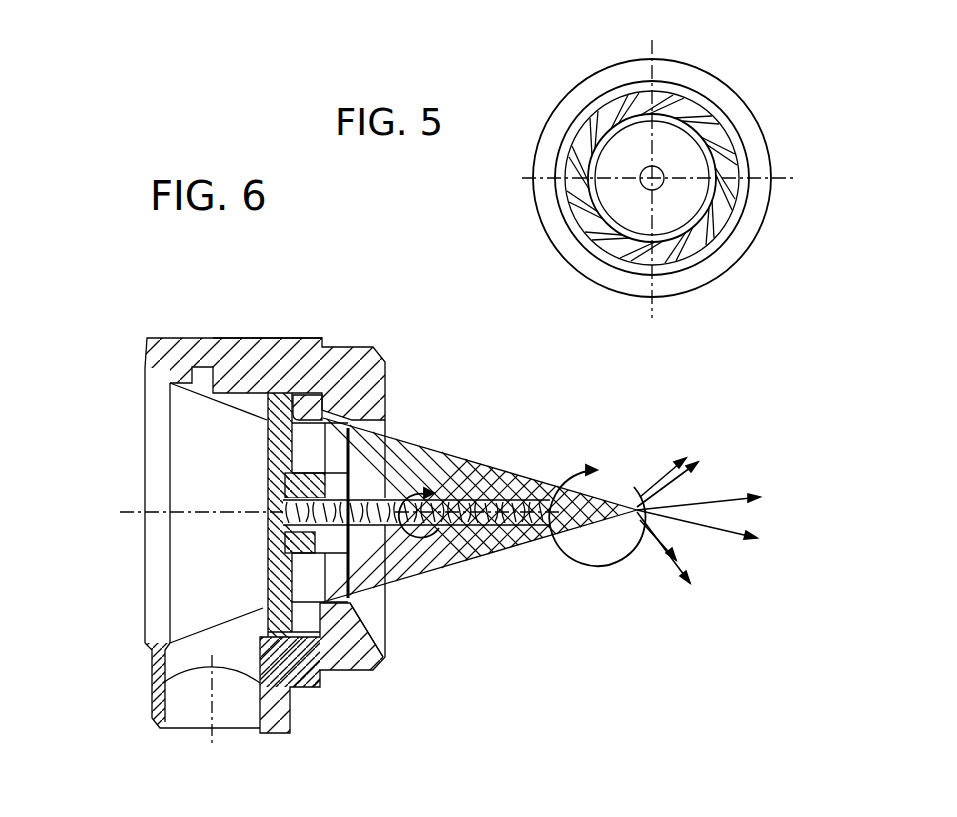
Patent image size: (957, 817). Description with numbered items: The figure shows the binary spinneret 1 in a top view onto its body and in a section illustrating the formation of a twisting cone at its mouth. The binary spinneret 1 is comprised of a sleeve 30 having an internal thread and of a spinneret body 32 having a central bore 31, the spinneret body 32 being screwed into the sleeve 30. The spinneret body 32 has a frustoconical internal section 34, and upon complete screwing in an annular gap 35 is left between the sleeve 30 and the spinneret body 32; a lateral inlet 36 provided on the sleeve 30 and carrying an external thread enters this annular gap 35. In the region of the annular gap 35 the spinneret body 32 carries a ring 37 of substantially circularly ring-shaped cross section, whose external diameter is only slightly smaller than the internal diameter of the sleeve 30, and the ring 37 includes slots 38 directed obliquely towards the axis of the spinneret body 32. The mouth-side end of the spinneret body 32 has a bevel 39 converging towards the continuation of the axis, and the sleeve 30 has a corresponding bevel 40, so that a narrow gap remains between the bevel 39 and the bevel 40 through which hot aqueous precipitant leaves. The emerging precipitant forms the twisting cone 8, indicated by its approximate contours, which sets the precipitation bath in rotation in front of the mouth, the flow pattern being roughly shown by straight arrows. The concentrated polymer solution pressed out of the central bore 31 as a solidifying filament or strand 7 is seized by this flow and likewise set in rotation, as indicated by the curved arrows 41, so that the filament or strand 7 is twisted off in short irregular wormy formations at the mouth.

In FIG. 6, the binary spinneret 1 is at (127, 355).
In FIG. 6, the filament or strand 7 is at (483, 500).
In FIG. 6, the twisting cone 8 is at (532, 478).
In FIG. 6, the sleeve 30 is at (185, 332).
In FIG. 6, the central bore 31 is at (292, 532).
In FIG. 5, the central bore 31 is at (643, 192).
In FIG. 6, the spinneret body 32 is at (307, 413).
In FIG. 5, the spinneret body 32 is at (718, 74).
In FIG. 6, the frustoconical internal section 34 is at (232, 335).
In FIG. 6, the annular gap 35 is at (257, 410).
In FIG. 6, the lateral inlet 36 is at (275, 713).
In FIG. 6, the ring 37 is at (312, 690).
In FIG. 5, the ring 37 is at (692, 260).
In FIG. 6, the slots 38 is at (288, 500).
In FIG. 5, the slots 38 is at (602, 118).
In FIG. 6, the bevel 39 is at (373, 670).
In FIG. 5, the bevel 39 is at (693, 127).
In FIG. 6, the bevel 40 is at (352, 420).
In FIG. 6, the curved arrows 41 is at (562, 556).